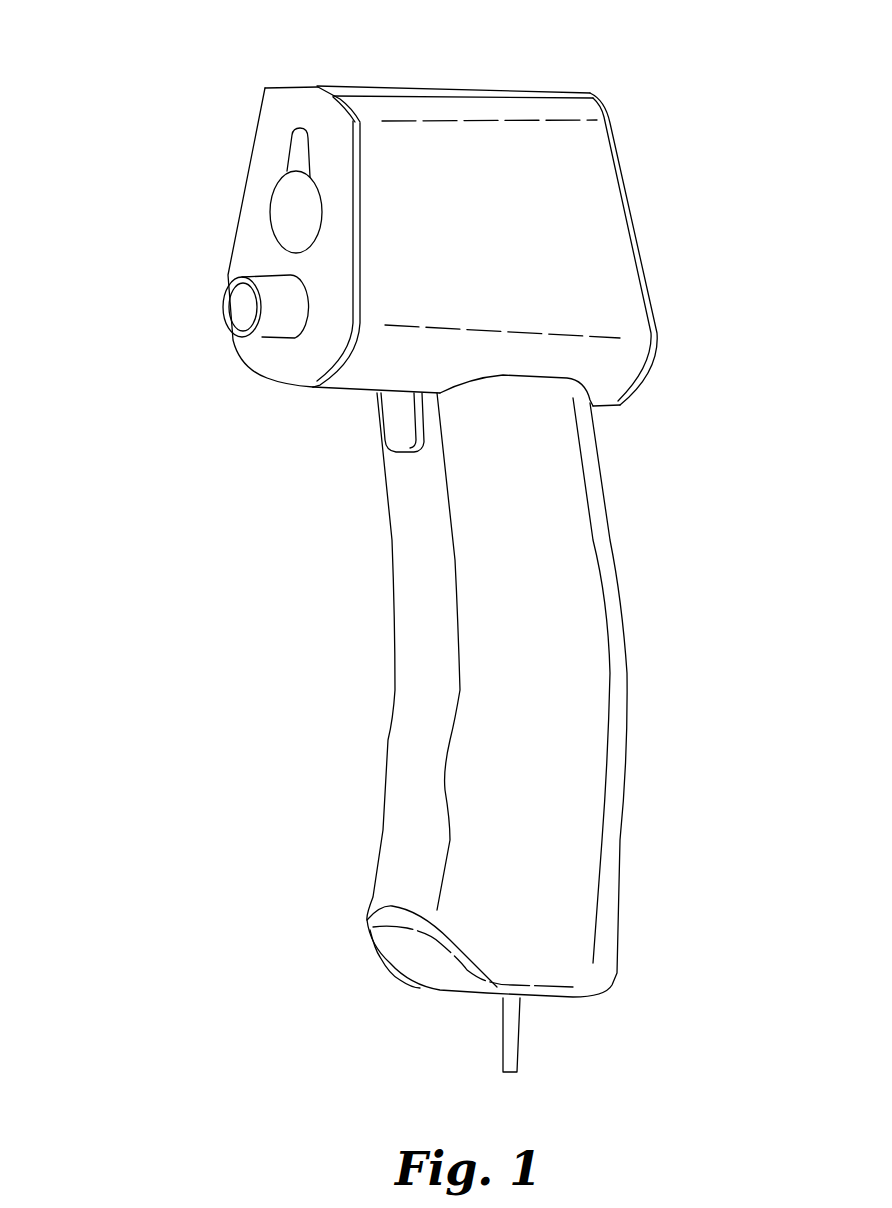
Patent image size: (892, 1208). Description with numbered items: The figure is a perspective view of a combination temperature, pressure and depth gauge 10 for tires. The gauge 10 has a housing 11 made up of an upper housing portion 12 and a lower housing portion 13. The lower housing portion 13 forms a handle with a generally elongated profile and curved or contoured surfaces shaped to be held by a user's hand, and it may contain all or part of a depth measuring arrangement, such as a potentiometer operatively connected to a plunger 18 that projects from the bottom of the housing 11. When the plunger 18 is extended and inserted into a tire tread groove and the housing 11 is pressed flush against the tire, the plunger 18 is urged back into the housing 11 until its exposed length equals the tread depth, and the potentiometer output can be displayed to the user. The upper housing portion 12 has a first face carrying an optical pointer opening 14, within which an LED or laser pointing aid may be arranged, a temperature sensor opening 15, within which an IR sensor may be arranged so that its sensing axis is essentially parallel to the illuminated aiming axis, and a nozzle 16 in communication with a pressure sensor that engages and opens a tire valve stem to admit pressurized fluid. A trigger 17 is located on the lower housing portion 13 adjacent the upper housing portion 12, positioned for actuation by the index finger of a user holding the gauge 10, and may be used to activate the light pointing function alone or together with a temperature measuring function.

The gauge 10 is at (437, 542).
The housing 11 is at (645, 288).
The upper housing portion 12 is at (570, 130).
The lower housing portion 13 is at (585, 658).
The optical pointer opening 14 is at (303, 146).
The temperature sensor opening 15 is at (273, 205).
The nozzle 16 is at (240, 318).
The trigger 17 is at (398, 430).
The plunger 18 is at (513, 1048).